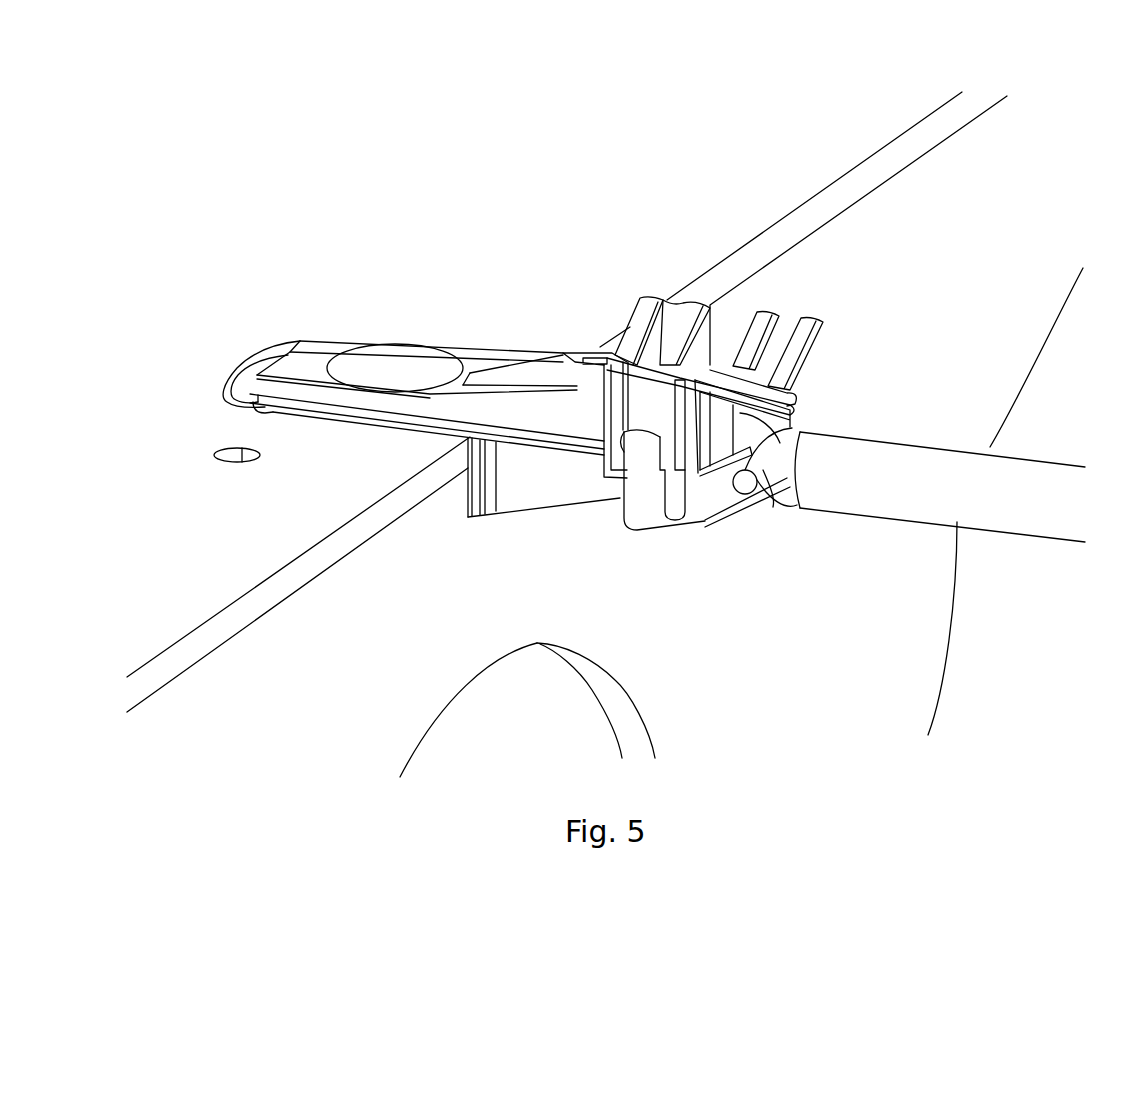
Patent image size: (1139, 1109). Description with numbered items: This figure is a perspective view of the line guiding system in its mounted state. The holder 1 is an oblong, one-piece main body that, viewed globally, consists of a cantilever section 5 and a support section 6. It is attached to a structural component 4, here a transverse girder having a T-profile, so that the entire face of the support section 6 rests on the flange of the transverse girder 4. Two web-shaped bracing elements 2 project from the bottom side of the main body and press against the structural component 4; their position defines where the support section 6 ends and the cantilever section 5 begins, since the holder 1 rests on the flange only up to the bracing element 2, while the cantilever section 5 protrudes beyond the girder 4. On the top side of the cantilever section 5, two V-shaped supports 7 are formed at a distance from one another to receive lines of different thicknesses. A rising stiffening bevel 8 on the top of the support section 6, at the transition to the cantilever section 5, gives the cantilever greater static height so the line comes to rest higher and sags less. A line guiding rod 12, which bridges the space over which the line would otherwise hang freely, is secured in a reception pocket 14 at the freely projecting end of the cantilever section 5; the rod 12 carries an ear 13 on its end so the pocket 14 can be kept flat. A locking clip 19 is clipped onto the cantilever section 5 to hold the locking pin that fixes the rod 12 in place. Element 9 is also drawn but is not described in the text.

The holder 1 is at (637, 204).
The bracing element 2 is at (476, 511).
The structural component 4 is at (887, 165).
The cantilever section 5 is at (702, 597).
The support section 6 is at (413, 284).
The support 7 is at (650, 298).
The stiffening bevel 8 is at (537, 352).
The base 9 is at (562, 495).
The line guiding rod 12 is at (920, 463).
The ear 13 is at (742, 505).
The reception pocket 14 is at (720, 495).
The locking clip 19 is at (643, 530).